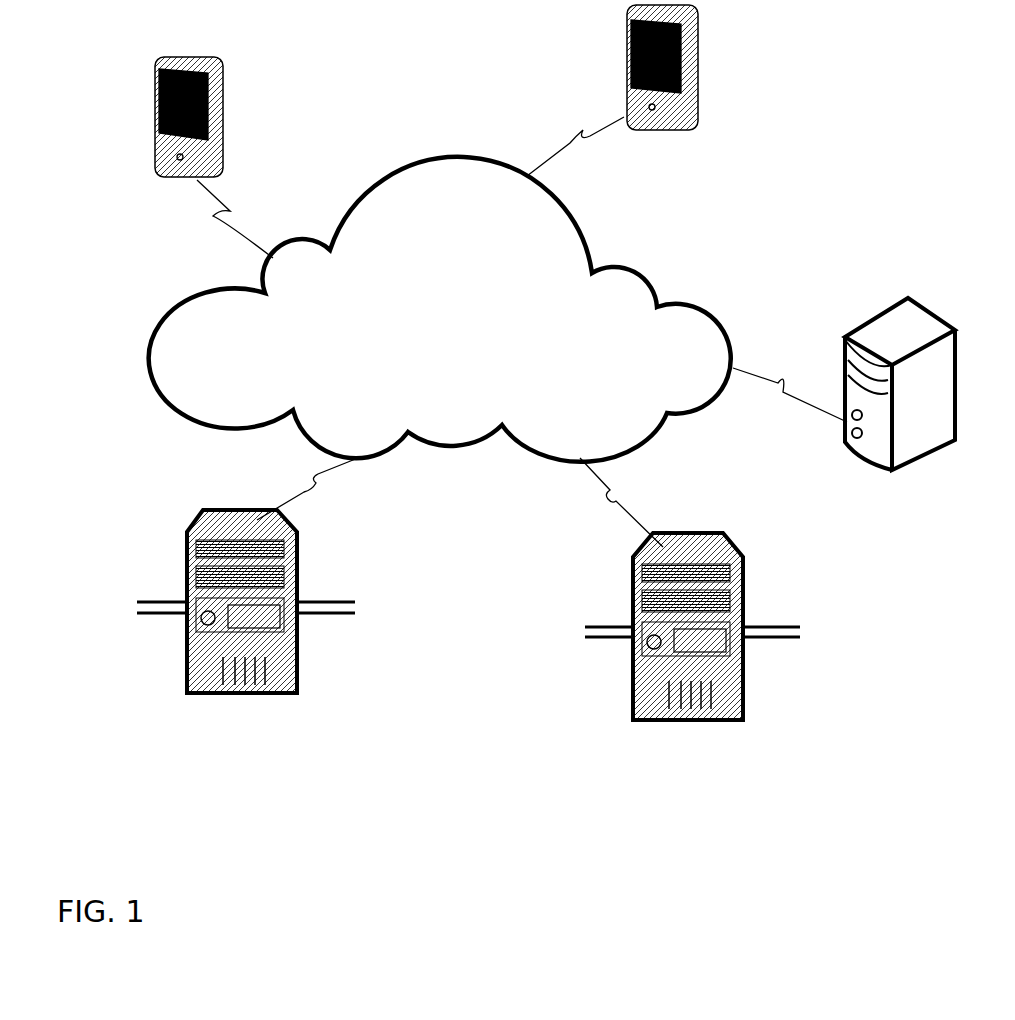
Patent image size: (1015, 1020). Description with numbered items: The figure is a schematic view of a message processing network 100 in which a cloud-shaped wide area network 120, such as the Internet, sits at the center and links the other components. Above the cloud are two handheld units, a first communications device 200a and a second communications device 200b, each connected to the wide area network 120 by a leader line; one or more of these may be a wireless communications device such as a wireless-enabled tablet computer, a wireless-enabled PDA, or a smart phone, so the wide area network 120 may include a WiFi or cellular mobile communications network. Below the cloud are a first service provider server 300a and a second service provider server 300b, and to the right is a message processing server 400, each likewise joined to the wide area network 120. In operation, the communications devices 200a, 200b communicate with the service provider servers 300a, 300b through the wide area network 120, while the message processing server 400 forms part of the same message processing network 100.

The message processing network 100 is at (519, 830).
The wide area network 120 is at (457, 447).
The first communications device 200a is at (223, 91).
The second communications device 200b is at (699, 113).
The first service provider server 300a is at (187, 655).
The second service provider server 300b is at (633, 681).
The message processing server 400 is at (932, 323).